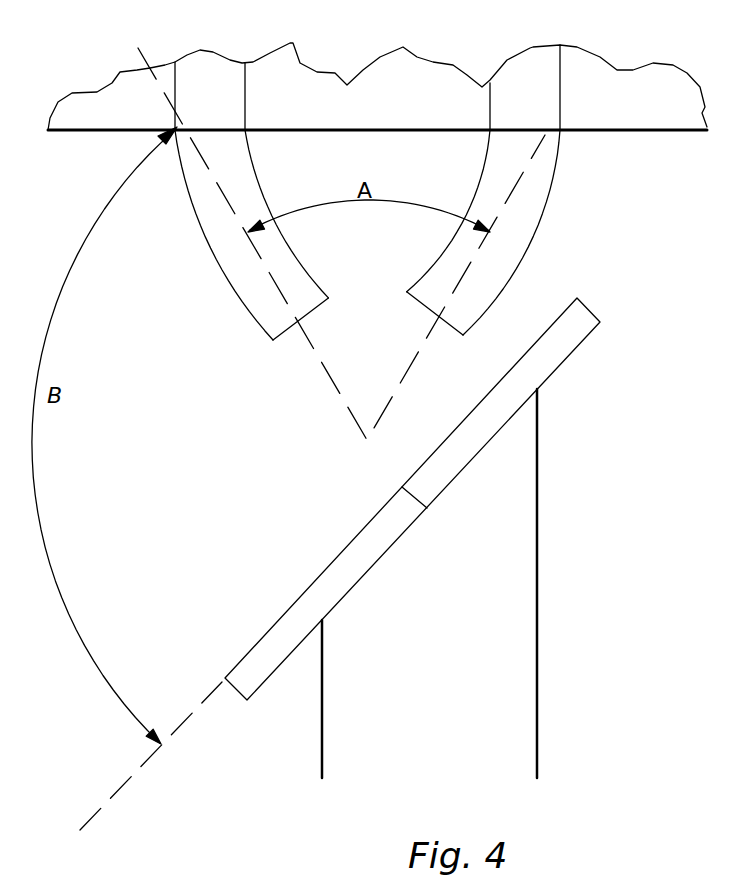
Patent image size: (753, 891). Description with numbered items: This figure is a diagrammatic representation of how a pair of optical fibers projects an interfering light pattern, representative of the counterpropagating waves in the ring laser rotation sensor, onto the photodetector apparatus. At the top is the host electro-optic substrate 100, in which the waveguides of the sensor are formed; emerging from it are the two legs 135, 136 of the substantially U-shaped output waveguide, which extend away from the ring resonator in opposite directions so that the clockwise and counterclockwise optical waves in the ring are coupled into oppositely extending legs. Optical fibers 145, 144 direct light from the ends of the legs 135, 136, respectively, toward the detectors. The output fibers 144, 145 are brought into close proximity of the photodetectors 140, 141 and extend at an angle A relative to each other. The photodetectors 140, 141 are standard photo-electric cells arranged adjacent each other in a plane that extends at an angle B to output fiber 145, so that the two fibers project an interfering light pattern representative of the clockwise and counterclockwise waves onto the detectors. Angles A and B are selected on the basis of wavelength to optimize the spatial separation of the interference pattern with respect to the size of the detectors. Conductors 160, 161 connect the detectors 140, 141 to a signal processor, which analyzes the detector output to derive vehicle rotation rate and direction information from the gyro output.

The host electro-optic substrate 100 is at (608, 132).
The leg of output waveguide 135 is at (217, 102).
The leg of output waveguide 136 is at (540, 98).
The photodetector 140 is at (598, 316).
The photodetector 141 is at (232, 692).
The optical fiber 144 is at (532, 233).
The optical fiber 145 is at (213, 255).
The conductor 160 is at (538, 670).
The conductor 161 is at (323, 682).